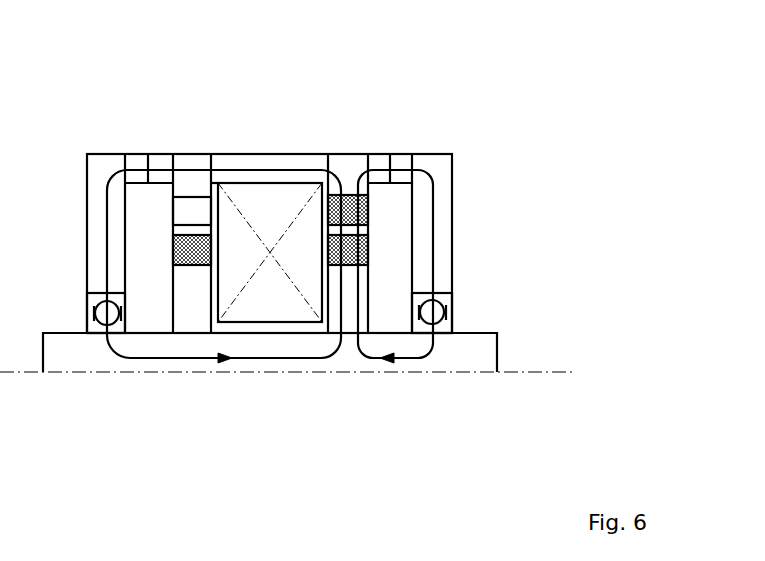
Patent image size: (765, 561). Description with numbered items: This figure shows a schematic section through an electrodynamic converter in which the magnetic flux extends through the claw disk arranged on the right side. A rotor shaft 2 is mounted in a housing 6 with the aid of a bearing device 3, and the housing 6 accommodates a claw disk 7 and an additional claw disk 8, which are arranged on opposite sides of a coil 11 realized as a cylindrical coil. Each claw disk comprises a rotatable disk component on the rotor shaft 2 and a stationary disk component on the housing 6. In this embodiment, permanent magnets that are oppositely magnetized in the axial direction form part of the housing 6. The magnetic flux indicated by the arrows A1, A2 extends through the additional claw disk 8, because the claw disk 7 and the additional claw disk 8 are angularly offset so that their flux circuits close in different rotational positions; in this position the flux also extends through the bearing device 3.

The rotor shaft 2 is at (483, 360).
The bearing device 3 is at (432, 310).
The housing 6 is at (438, 173).
The claw disk 7 is at (193, 163).
The additional claw disk 8 is at (345, 173).
The coil 11 is at (270, 297).
The magnetic flux arrow A1 is at (115, 347).
The magnetic flux arrow A2 is at (413, 358).